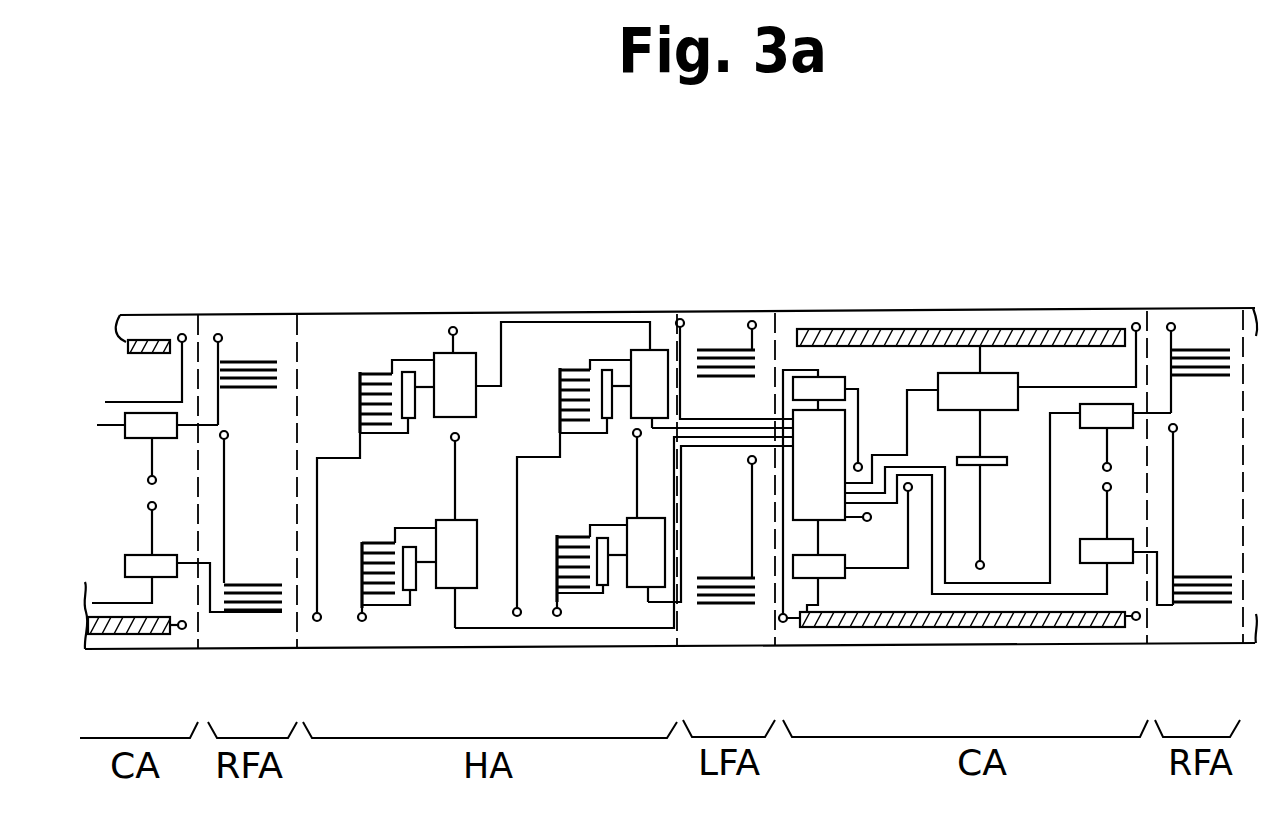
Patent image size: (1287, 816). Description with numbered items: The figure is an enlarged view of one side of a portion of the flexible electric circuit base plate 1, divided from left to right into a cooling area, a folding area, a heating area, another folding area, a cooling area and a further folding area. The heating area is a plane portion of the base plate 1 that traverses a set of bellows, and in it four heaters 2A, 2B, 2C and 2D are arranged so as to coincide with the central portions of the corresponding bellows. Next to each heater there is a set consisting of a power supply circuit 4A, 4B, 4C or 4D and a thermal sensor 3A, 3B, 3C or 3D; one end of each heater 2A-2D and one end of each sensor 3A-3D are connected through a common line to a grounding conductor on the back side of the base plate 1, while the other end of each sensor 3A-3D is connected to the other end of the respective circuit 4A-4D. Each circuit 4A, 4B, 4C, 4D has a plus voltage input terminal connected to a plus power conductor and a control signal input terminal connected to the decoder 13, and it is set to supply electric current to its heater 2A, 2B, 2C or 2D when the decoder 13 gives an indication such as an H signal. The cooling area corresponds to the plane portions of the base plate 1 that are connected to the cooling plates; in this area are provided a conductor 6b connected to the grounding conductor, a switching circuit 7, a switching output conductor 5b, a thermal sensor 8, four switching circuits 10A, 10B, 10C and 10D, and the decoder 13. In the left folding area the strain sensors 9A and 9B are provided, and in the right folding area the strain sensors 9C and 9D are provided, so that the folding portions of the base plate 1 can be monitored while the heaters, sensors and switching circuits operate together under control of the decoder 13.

The flexible electric circuit base plate 1 is at (741, 310).
The heater 2A is at (572, 370).
The heater 2B is at (368, 372).
The heater 2C is at (556, 575).
The heater 2D is at (362, 580).
The thermal sensor 3A is at (606, 370).
The thermal sensor 3B is at (409, 372).
The thermal sensor 3C is at (605, 585).
The thermal sensor 3D is at (414, 590).
The power supply circuit 4A is at (649, 350).
The power supply circuit 4B is at (440, 353).
The power supply circuit 4C is at (640, 587).
The power supply circuit 4D is at (455, 590).
The switching output conductor 5b is at (939, 329).
The conductor 6b is at (1000, 627).
The switching circuit 7 is at (1000, 373).
The thermal sensor 8 is at (1006, 457).
The strain sensor 9A is at (715, 349).
The strain sensor 9B is at (722, 604).
The strain sensor 9C is at (1203, 350).
The strain sensor 9D is at (1202, 603).
The switching circuit 10A is at (837, 377).
The switching circuit 10B is at (837, 578).
The switching circuit 10C is at (1102, 404).
The switching circuit 10D is at (1097, 563).
The decoder 13 is at (798, 520).